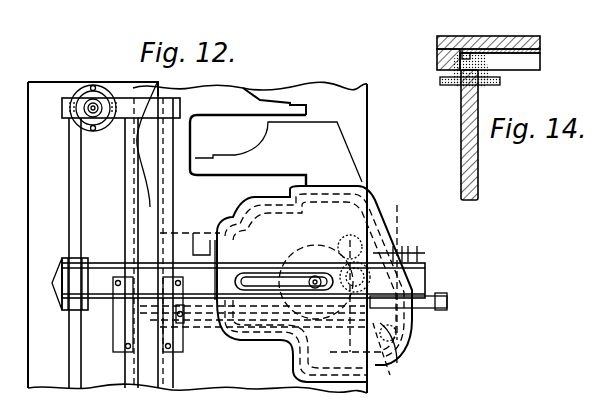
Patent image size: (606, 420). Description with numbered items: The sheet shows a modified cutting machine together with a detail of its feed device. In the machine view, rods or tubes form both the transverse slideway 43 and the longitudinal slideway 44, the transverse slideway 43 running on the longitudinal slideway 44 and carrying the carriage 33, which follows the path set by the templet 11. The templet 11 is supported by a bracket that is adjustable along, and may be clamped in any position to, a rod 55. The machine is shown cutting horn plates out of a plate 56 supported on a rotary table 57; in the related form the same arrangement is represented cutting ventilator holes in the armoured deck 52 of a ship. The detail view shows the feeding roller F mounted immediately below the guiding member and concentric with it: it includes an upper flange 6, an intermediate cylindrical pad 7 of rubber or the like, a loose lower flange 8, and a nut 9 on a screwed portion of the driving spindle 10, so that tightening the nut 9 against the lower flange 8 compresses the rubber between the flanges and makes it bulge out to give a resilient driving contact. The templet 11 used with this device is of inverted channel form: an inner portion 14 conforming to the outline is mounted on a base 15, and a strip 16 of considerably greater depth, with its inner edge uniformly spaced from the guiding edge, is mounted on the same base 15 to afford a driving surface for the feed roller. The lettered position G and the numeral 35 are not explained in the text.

In FIG. 12, the longitudinal slideway 44 is at (125, 152).
In FIG. 12, the plate 56 is at (355, 108).
In FIG. 12, the rod 55 is at (78, 234).
In FIG. 12, the armoured deck 52 is at (202, 277).
In FIG. 12, the rod 35 is at (147, 343).
In FIG. 12, the transverse slideway 43 is at (202, 333).
In FIG. 12, the rotary table 57 is at (222, 365).
In FIG. 12, the templet 11 is at (395, 228).
In FIG. 14, the templet 11 is at (530, 52).
In FIG. 12, the feeding roller F is at (403, 328).
In FIG. 14, the feeding roller F is at (492, 70).
In FIG. 12, the part G is at (378, 392).
In FIG. 14, the part G is at (463, 38).
In FIG. 12, the carriage 33 is at (396, 346).
In FIG. 14, the base 15 is at (487, 36).
In FIG. 14, the inner portion 14 is at (505, 40).
In FIG. 14, the strip 16 is at (440, 52).
In FIG. 14, the upper flange 6 is at (480, 54).
In FIG. 14, the intermediate cylindrical pad 7 is at (440, 61).
In FIG. 14, the loose lower flange 8 is at (445, 79).
In FIG. 14, the nut 9 is at (480, 82).
In FIG. 14, the driving spindle 10 is at (461, 138).